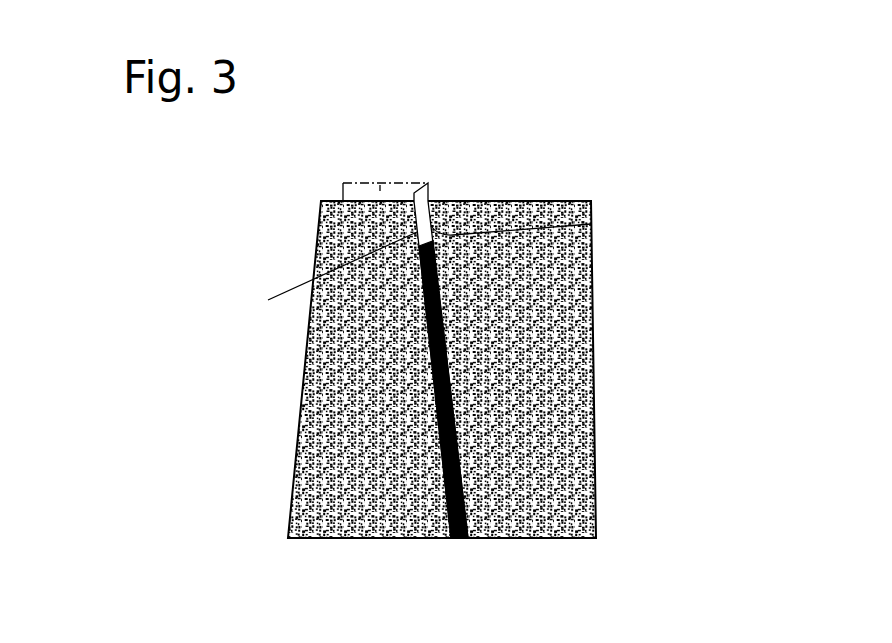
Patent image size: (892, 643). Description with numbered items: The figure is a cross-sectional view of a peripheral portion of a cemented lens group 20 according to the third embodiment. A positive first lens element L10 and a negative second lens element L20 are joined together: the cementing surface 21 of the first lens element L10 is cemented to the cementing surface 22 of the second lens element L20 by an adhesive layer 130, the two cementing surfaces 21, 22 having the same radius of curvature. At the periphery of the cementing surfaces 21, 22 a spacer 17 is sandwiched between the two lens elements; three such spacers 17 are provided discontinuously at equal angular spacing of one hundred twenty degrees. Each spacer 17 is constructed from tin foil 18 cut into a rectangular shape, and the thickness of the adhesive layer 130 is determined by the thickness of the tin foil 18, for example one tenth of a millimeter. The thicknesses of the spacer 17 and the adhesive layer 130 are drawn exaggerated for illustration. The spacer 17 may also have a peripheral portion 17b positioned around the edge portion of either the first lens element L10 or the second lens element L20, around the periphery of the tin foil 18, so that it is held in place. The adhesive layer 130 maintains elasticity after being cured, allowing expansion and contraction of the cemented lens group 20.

The cemented lens group 20 is at (639, 133).
The spacer 17 is at (419, 177).
The tin foil 18 is at (472, 326).
The peripheral portion 17b is at (368, 170).
The cementing surface 21 is at (260, 292).
The cementing surface 22 is at (583, 216).
The first lens element L10 is at (322, 396).
The second lens element L20 is at (555, 382).
The adhesive layer 130 is at (447, 531).